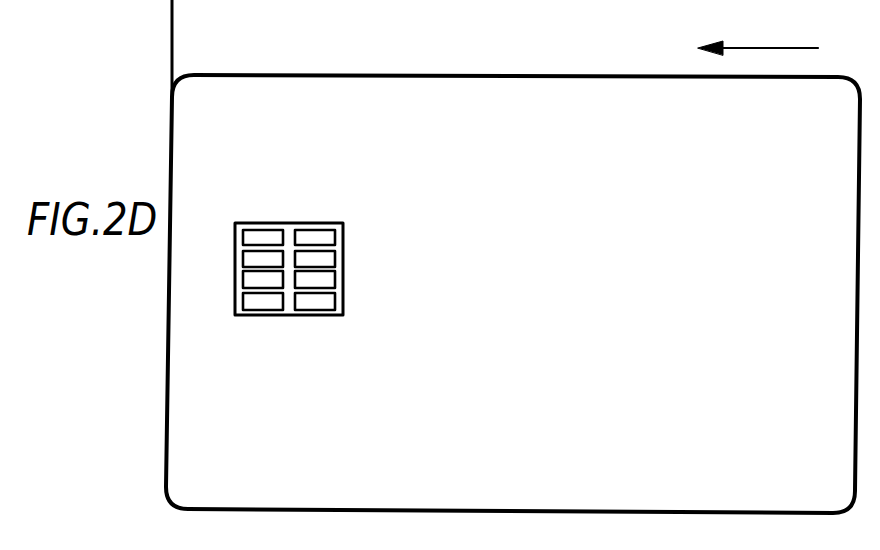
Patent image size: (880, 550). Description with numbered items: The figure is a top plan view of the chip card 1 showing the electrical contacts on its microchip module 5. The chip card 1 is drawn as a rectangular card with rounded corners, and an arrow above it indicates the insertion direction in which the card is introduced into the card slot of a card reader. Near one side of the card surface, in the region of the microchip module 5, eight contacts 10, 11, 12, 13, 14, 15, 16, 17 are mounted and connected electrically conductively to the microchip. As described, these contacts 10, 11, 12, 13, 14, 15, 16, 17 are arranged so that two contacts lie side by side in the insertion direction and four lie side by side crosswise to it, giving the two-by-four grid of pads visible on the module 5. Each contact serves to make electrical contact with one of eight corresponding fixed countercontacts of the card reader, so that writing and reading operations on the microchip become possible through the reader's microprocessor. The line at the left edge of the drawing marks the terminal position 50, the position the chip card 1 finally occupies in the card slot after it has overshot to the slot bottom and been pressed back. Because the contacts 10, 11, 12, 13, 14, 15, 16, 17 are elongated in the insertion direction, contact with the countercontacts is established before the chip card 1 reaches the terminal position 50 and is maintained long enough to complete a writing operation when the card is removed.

The chip card 1 is at (825, 97).
The microchip module 5 is at (344, 245).
The first contact 10 is at (265, 236).
The contact 11 is at (248, 260).
The contact 12 is at (248, 280).
The contact 13 is at (255, 300).
The contact 14 is at (304, 300).
The contact 15 is at (332, 281).
The contact 16 is at (332, 261).
The eighth contact 17 is at (313, 236).
The terminal position 50 is at (172, 22).